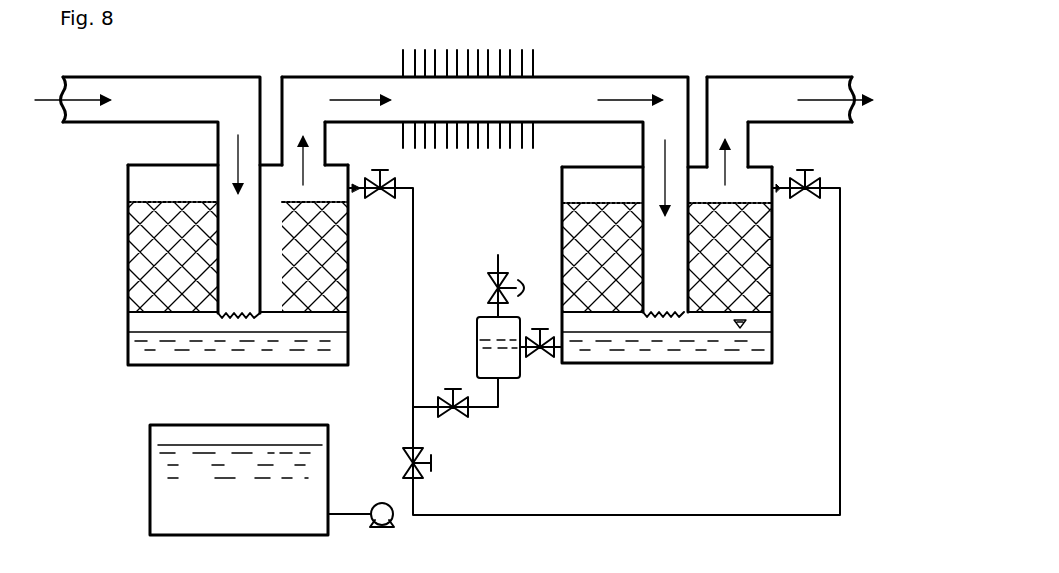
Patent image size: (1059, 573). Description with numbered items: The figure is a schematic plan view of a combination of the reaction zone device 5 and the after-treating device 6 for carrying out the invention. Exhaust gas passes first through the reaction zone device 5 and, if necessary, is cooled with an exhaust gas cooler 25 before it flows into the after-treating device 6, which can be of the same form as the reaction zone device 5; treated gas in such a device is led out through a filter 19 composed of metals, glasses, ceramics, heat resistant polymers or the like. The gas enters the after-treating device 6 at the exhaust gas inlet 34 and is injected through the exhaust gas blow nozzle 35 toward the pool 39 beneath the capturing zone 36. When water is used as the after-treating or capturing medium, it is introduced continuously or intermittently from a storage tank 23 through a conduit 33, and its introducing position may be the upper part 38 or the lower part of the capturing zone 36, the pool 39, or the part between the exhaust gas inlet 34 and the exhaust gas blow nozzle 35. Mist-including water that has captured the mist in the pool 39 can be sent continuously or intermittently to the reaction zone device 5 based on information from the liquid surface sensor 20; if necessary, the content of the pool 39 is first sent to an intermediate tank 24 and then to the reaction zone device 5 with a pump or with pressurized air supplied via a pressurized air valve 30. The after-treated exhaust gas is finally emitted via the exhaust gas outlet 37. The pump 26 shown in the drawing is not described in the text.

The reaction zone device 5 is at (128, 268).
The after-treating device 6 is at (772, 263).
The filter 19 is at (150, 202).
The liquid surface sensor 20 is at (505, 327).
The storage tank 23 is at (150, 475).
The intermediate tank 24 is at (520, 372).
The exhaust gas cooler 25 is at (533, 65).
The pump 26 is at (375, 500).
The pressurized air valve 30 is at (487, 298).
The conduit 33 is at (413, 240).
The exhaust gas inlet 34 is at (582, 97).
The exhaust gas blow nozzle 35 is at (683, 322).
The capturing zone 36 is at (738, 282).
The exhaust gas outlet 37 is at (843, 95).
The upper part of the capturing zone 38 is at (775, 193).
The pool 39 is at (645, 353).